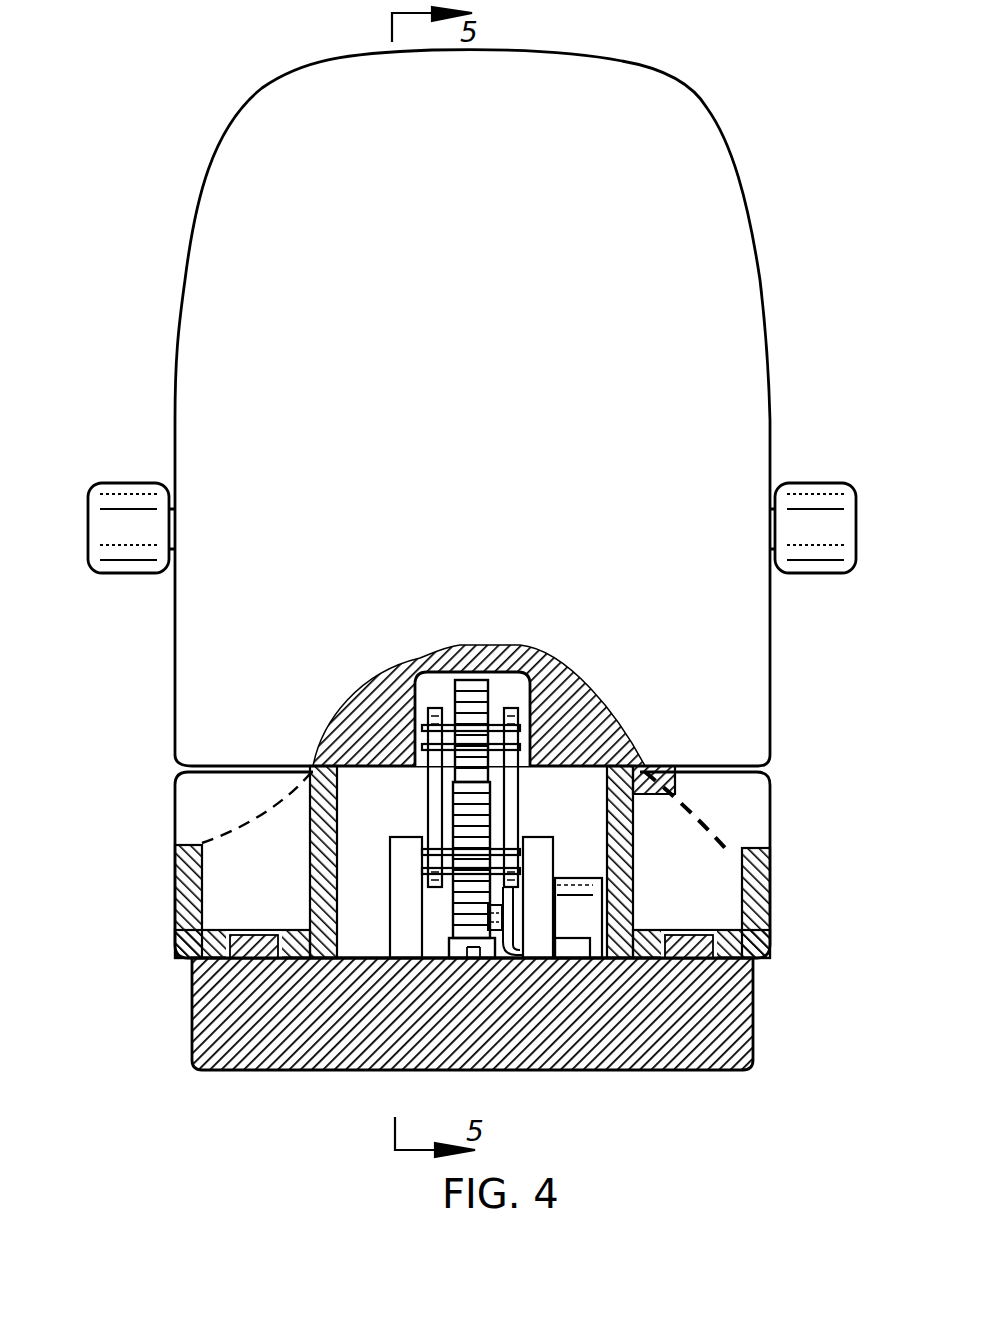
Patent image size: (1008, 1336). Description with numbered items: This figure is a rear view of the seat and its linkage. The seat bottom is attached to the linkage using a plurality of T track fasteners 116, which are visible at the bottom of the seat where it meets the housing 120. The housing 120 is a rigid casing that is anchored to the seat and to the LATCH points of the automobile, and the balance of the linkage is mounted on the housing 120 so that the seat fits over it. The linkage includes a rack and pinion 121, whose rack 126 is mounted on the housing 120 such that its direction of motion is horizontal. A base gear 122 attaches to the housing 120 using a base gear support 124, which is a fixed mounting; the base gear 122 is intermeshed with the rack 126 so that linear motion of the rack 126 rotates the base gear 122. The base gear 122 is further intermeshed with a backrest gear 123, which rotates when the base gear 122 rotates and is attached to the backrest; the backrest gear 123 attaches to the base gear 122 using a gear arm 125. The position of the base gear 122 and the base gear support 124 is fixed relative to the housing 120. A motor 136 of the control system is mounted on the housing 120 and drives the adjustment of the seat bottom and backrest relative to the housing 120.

The T track fasteners 116 is at (253, 931).
The housing 120 is at (743, 993).
The rack and pinion 121 is at (472, 810).
The base gear 122 is at (473, 692).
The backrest gear 123 is at (537, 847).
The base gear support 124 is at (390, 883).
The gear arm 125 is at (427, 803).
The rack 126 is at (462, 958).
The motor 136 is at (578, 878).